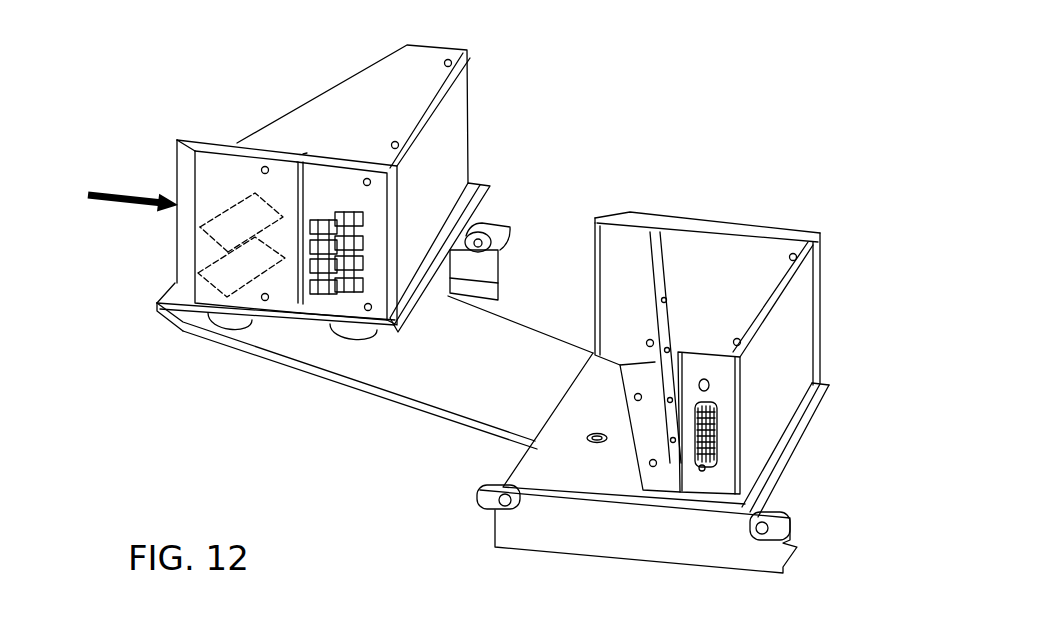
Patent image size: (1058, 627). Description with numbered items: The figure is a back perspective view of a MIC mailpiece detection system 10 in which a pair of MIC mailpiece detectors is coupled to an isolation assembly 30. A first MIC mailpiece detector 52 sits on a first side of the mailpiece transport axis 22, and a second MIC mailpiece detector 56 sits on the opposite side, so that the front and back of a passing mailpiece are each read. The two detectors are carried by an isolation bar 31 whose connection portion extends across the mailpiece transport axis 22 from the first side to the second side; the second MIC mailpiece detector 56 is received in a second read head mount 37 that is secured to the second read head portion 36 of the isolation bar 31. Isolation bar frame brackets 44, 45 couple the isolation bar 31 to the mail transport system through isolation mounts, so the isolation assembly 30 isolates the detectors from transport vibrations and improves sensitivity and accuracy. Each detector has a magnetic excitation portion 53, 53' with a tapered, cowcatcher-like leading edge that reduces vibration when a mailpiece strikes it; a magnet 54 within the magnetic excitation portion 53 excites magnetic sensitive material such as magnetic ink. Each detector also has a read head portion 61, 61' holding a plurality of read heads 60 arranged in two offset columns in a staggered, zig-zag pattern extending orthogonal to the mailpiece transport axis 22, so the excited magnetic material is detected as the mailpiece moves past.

The MIC mailpiece detection system 10 is at (737, 118).
The mailpiece transport axis 22 is at (120, 190).
The isolation assembly 30 is at (440, 373).
The isolation bar 31 is at (483, 382).
The second read head portion 36 is at (778, 467).
The second read head mount 37 is at (603, 453).
The isolation bar frame bracket 44 is at (485, 268).
The isolation bar frame bracket 45 is at (523, 523).
The first MIC mailpiece detector 52 is at (425, 93).
The magnetic excitation portion 53 is at (242, 183).
The magnetic excitation portion 53' is at (743, 315).
The magnet 54 is at (220, 275).
The second MIC mailpiece detector 56 is at (748, 310).
The read heads 60 is at (323, 297).
The read head portion 61 is at (347, 176).
The read head portion 61' is at (707, 189).